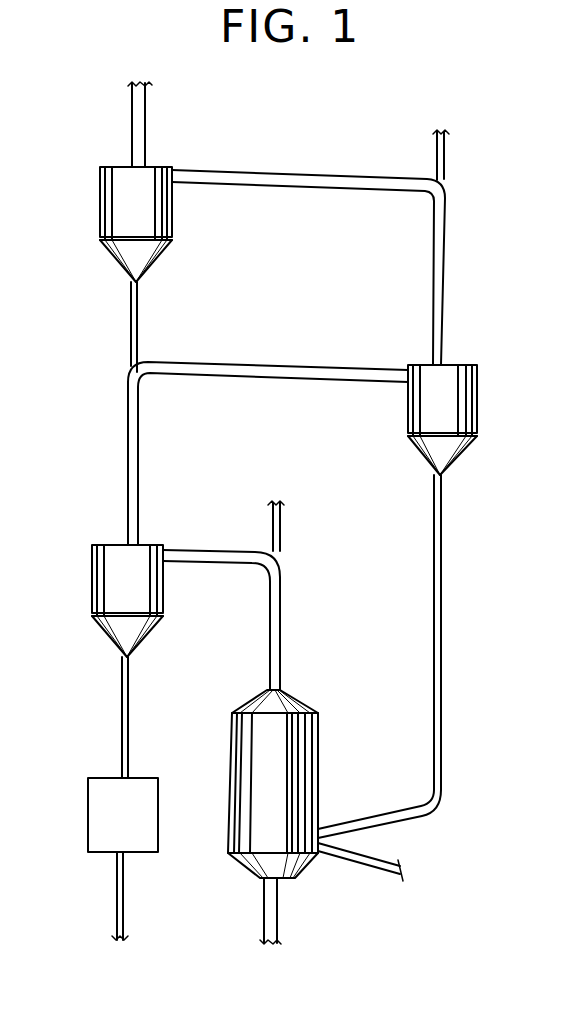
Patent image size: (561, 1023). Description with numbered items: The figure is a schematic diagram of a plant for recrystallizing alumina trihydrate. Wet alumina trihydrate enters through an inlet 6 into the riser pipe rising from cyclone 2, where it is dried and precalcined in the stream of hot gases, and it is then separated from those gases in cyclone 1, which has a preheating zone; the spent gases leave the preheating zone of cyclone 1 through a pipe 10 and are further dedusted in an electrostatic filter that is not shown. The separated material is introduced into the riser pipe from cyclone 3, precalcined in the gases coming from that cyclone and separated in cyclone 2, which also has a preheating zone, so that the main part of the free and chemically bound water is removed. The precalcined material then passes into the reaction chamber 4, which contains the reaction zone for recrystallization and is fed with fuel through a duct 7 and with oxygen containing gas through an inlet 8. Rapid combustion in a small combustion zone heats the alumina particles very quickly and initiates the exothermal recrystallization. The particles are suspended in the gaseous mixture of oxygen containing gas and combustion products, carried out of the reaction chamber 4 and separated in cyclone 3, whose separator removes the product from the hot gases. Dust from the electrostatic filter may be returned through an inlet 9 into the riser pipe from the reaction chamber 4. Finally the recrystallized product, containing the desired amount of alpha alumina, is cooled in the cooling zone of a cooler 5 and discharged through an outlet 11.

The cyclone 1 is at (118, 202).
The cyclone 2 is at (460, 395).
The cyclone 3 is at (113, 580).
The reaction chamber 4 is at (303, 765).
The cooler 5 is at (100, 808).
The inlet 6 is at (445, 156).
The duct 7 is at (386, 873).
The inlet 8 is at (270, 922).
The inlet 9 is at (280, 534).
The pipe 10 is at (145, 126).
The outlet 11 is at (118, 910).